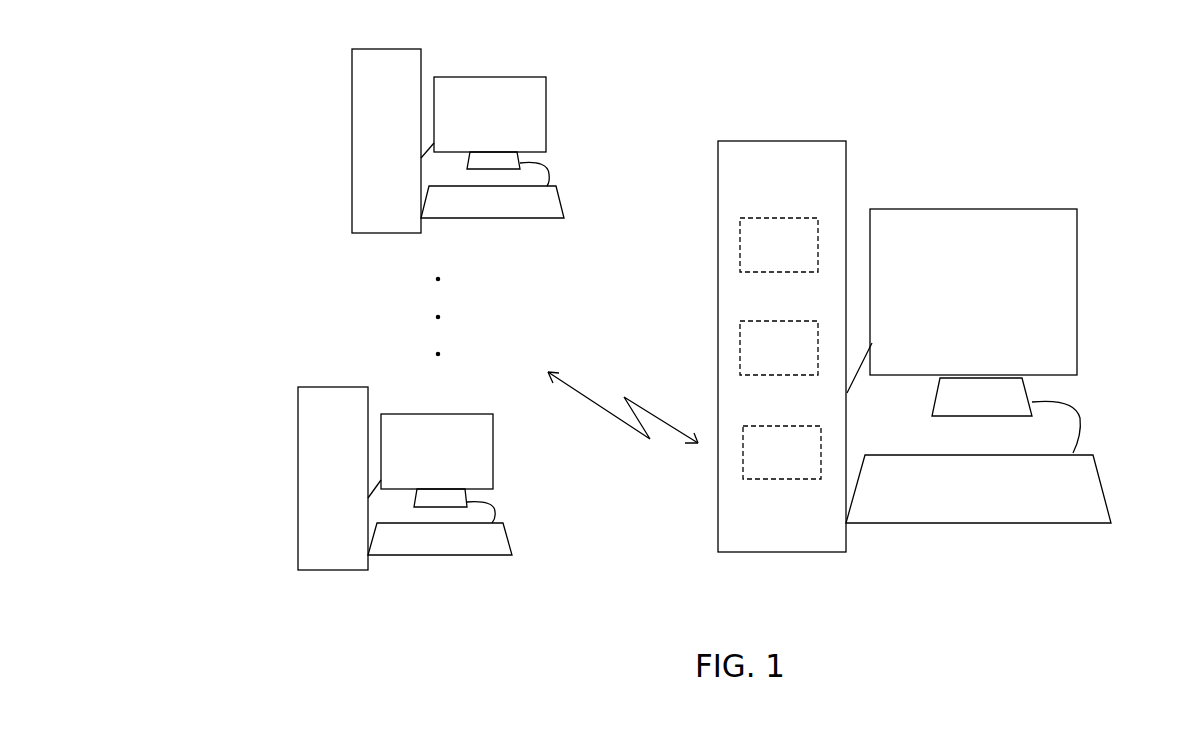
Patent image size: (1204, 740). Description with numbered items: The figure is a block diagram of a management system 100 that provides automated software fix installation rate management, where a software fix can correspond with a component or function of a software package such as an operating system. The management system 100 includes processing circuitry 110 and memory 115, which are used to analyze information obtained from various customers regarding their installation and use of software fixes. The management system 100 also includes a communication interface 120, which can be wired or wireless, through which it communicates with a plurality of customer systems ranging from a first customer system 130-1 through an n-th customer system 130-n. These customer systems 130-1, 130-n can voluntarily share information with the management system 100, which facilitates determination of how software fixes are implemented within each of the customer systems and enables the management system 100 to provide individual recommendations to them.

The management system 100 is at (959, 296).
The processing circuitry 110 is at (779, 245).
The memory 115 is at (779, 348).
The communication interface 120 is at (782, 452).
The customer system 130-1 is at (328, 93).
The customer system 130-n is at (266, 406).